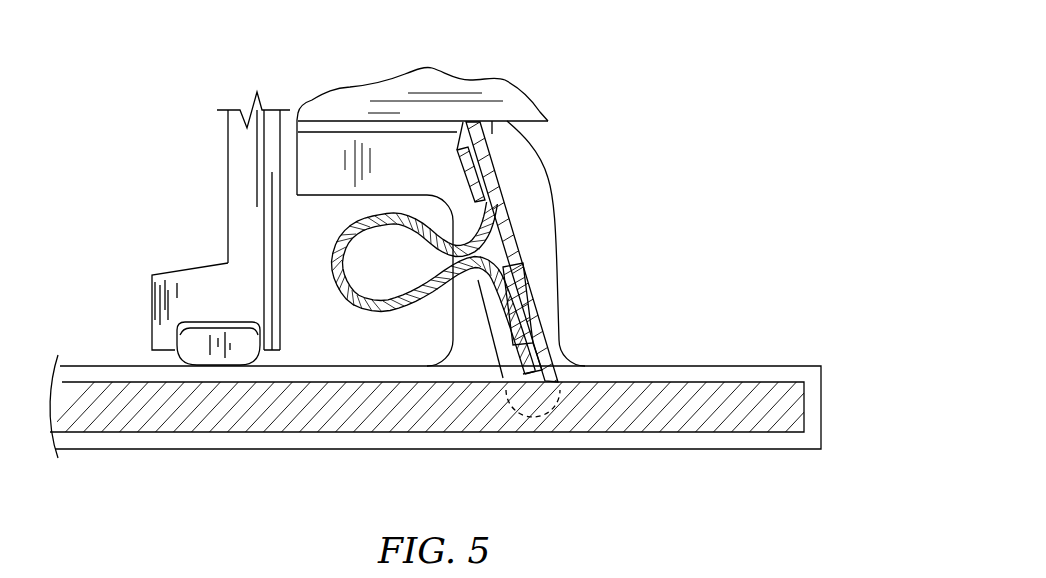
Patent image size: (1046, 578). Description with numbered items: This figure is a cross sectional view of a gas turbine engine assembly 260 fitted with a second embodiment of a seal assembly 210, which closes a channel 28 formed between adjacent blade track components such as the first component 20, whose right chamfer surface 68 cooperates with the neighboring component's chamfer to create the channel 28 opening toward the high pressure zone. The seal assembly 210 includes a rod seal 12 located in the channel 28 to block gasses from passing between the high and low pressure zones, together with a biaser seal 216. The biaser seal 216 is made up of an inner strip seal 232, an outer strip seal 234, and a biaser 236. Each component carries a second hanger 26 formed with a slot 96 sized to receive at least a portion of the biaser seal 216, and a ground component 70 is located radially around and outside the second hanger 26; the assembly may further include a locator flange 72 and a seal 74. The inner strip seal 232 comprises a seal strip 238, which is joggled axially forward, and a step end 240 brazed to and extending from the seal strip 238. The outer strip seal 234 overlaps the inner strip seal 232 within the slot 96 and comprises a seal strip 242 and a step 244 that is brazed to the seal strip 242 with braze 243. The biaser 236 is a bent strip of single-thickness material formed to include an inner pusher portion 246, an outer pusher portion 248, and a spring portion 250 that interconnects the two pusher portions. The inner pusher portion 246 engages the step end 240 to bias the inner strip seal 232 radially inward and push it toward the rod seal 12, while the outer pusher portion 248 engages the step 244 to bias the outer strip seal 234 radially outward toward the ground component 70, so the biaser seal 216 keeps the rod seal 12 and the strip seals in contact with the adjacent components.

The gas turbine engine assembly 260 is at (130, 66).
The biaser seal 216 is at (377, 203).
The outer pusher portion 248 is at (472, 215).
The step 244 is at (463, 130).
The ground component 70 is at (492, 80).
The slot 96 is at (502, 150).
The seal assembly 210 is at (670, 138).
The locator flange 72 is at (230, 160).
The braze 243 is at (508, 152).
The outer strip seal 234 is at (507, 202).
The second hanger 26 is at (322, 200).
The seal strip 242 is at (523, 232).
The seal 74 is at (190, 320).
The seal strip 238 is at (535, 297).
The inner strip seal 232 is at (552, 327).
The rod seal 12 is at (78, 380).
The channel 28 is at (128, 372).
The biaser 236 is at (323, 262).
The spring portion 250 is at (403, 313).
The first component 20 is at (747, 363).
The right chamfer surface 68 is at (793, 372).
The inner pusher portion 246 is at (490, 305).
The step end 240 is at (520, 378).